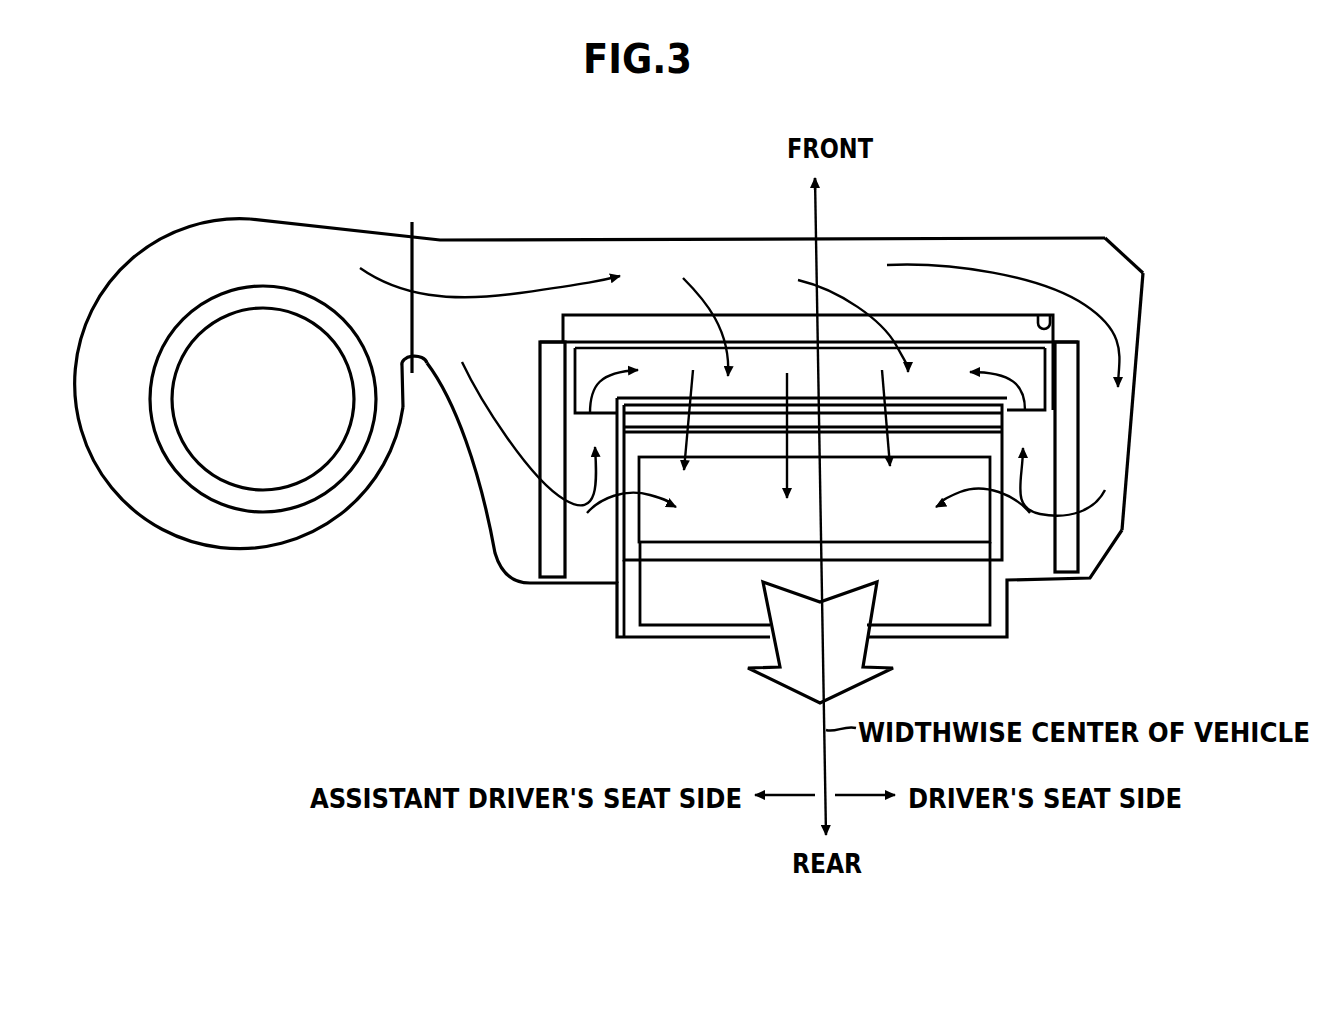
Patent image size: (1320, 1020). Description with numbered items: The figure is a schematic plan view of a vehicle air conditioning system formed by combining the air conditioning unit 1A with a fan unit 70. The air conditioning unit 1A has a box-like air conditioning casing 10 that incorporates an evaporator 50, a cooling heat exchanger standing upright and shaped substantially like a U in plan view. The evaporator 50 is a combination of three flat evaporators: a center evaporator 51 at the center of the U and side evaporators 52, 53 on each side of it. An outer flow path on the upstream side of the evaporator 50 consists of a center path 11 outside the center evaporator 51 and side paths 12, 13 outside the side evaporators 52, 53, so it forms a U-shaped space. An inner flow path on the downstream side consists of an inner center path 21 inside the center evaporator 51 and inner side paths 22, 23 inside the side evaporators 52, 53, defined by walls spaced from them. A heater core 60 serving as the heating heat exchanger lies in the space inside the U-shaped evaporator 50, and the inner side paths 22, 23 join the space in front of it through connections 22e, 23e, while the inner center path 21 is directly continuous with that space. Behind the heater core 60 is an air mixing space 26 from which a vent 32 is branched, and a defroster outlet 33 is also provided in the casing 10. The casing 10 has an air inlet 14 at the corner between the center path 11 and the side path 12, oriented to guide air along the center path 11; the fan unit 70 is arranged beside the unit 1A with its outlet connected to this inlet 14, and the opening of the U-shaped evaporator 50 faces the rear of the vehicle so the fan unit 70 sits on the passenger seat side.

The air conditioning unit 1A is at (1126, 176).
The air conditioning casing 10 is at (721, 228).
The center path 11 is at (908, 246).
The side path 12 is at (500, 522).
The side path 13 is at (1132, 407).
The air inlet 14 is at (413, 275).
The inner center path 21 is at (768, 355).
The inner side path 22 is at (573, 588).
The connection 22e is at (640, 357).
The inner side path 23 is at (1038, 565).
The connection 23e is at (1022, 357).
The air mixing space 26 is at (693, 597).
The vent 32 is at (972, 606).
The defroster outlet 33 is at (1052, 323).
The evaporator 50 is at (1004, 298).
The center evaporator 51 is at (967, 320).
The side evaporator 52 is at (540, 553).
The side evaporator 53 is at (1080, 472).
The heater core 60 is at (693, 540).
The fan unit 70 is at (278, 214).